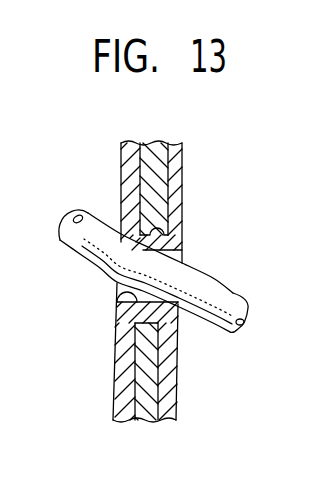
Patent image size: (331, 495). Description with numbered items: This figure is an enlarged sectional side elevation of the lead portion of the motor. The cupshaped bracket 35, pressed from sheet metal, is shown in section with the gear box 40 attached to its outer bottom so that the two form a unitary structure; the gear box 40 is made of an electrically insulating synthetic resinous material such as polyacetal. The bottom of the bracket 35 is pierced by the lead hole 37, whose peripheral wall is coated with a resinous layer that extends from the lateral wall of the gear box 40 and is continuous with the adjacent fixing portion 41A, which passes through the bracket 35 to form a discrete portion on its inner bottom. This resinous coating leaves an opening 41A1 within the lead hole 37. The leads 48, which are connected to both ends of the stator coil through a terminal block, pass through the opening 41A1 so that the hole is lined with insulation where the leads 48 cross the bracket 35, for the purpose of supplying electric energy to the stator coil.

The cupshaped bracket 35 is at (153, 165).
The gear box 40 is at (180, 163).
The lead hole 37 is at (165, 243).
The leads 48 is at (225, 303).
The fixing portion 41A is at (117, 357).
The opening 41A1 is at (120, 297).